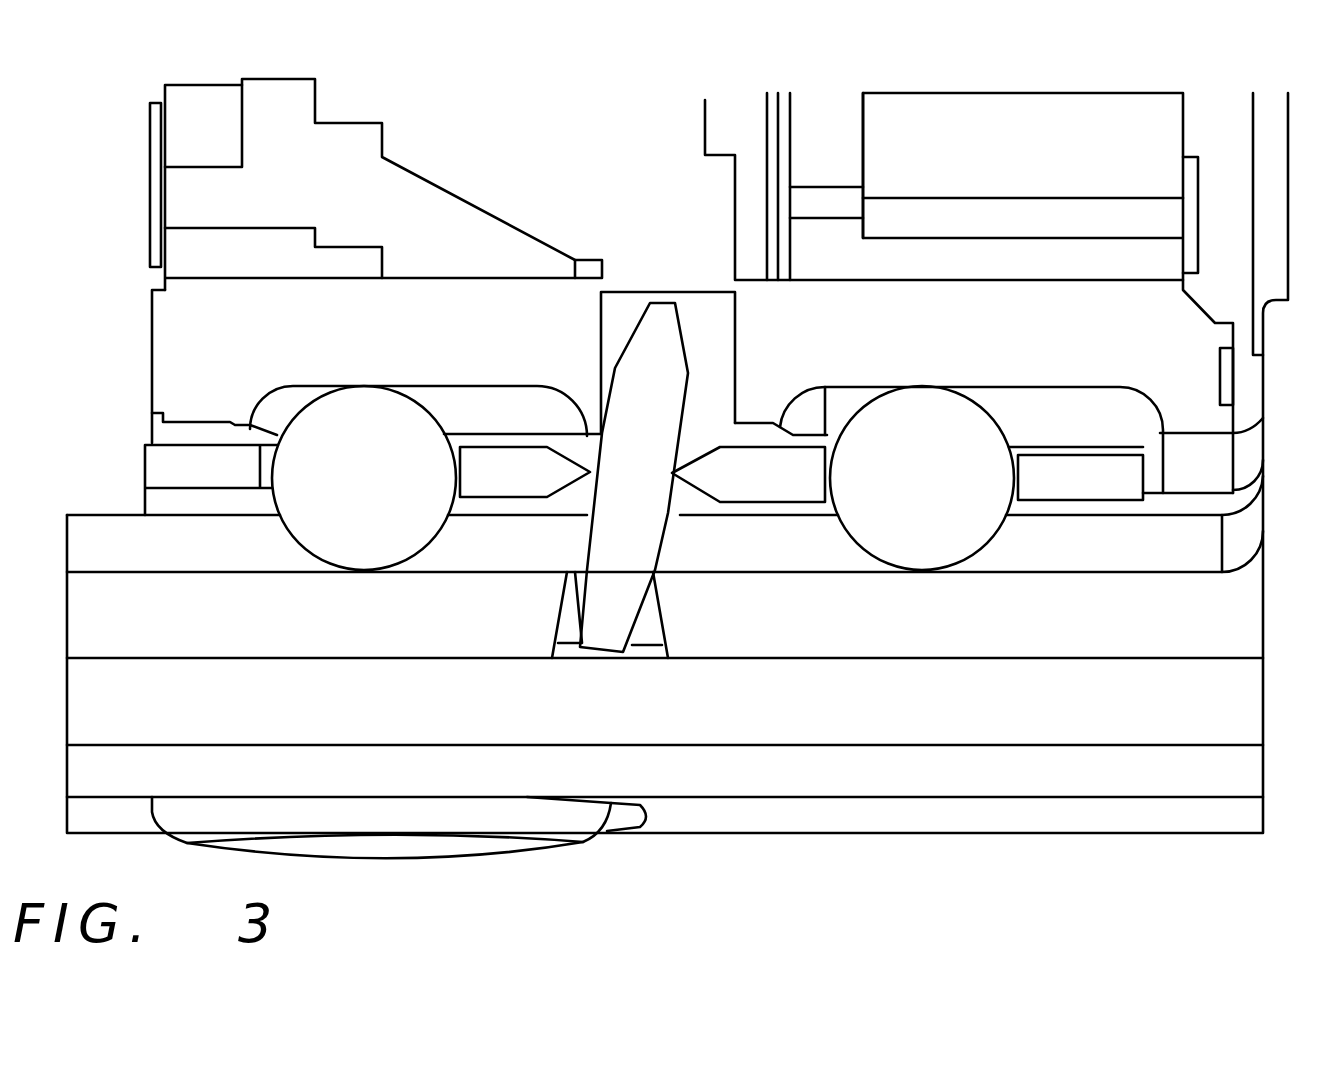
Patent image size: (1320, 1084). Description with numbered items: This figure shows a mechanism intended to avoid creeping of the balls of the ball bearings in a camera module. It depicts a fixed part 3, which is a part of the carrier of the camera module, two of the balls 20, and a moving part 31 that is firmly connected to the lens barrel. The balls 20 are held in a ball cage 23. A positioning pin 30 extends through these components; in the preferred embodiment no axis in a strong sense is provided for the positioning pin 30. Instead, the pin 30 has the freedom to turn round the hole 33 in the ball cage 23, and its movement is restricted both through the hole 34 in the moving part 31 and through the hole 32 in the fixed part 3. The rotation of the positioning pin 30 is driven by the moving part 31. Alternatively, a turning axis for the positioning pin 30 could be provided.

The fixed part 3 is at (1240, 611).
The balls 20 is at (372, 410).
The ball cage 23 is at (467, 397).
The positioning pin 30 is at (655, 348).
The moving part 31 is at (902, 321).
The hole in the fixed part 32 is at (652, 612).
The hole in the ball cage 33 is at (572, 497).
The hole in the moving part 34 is at (615, 315).